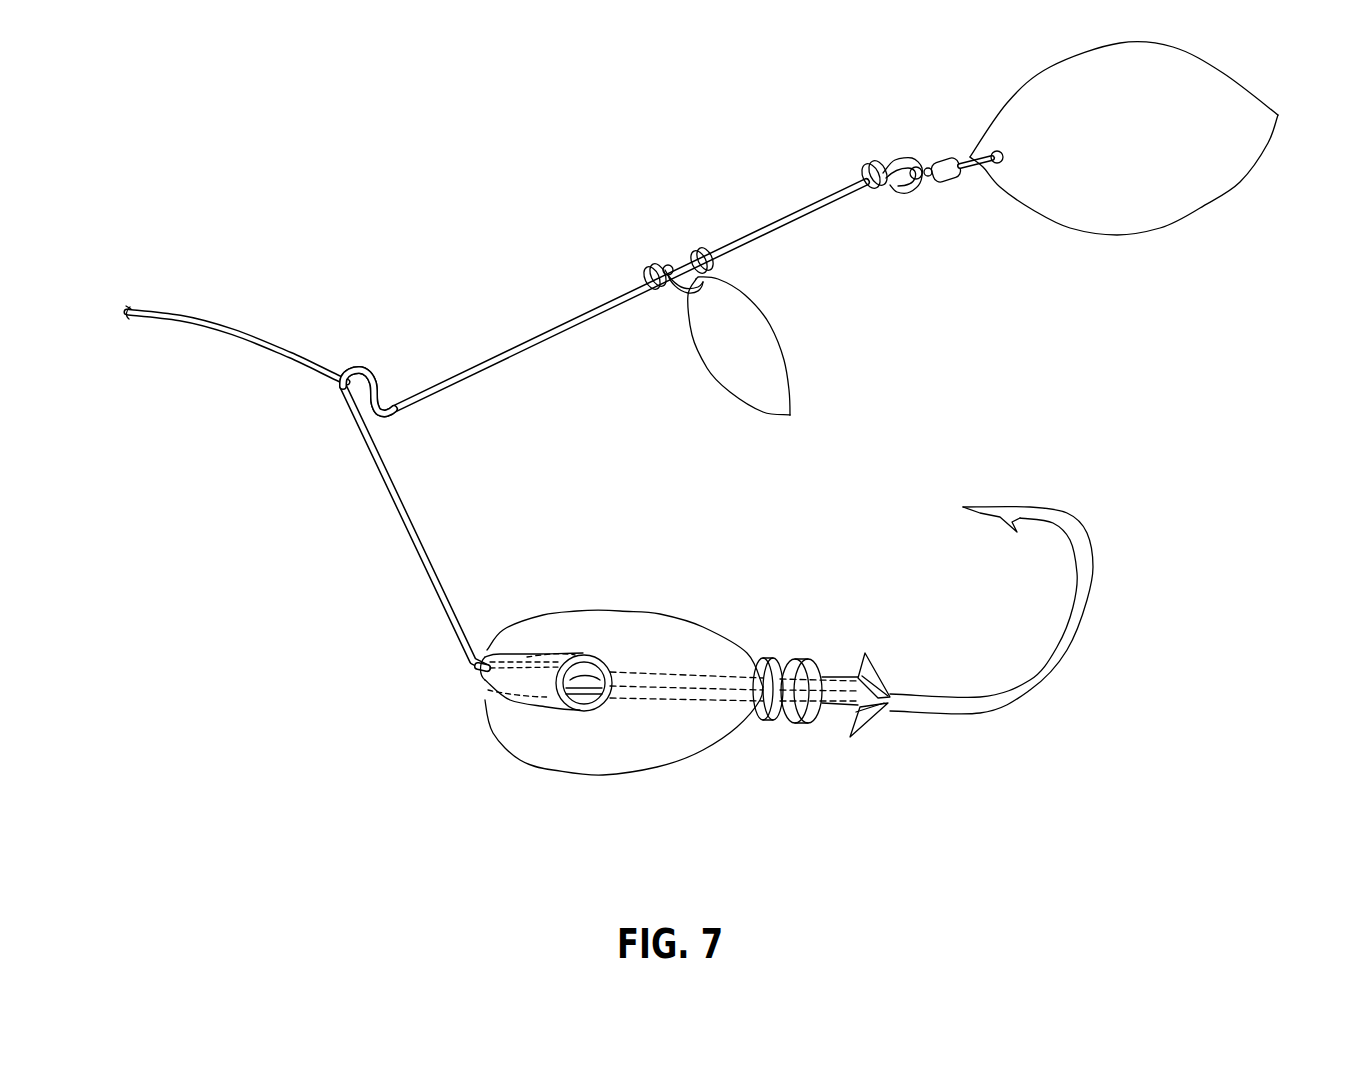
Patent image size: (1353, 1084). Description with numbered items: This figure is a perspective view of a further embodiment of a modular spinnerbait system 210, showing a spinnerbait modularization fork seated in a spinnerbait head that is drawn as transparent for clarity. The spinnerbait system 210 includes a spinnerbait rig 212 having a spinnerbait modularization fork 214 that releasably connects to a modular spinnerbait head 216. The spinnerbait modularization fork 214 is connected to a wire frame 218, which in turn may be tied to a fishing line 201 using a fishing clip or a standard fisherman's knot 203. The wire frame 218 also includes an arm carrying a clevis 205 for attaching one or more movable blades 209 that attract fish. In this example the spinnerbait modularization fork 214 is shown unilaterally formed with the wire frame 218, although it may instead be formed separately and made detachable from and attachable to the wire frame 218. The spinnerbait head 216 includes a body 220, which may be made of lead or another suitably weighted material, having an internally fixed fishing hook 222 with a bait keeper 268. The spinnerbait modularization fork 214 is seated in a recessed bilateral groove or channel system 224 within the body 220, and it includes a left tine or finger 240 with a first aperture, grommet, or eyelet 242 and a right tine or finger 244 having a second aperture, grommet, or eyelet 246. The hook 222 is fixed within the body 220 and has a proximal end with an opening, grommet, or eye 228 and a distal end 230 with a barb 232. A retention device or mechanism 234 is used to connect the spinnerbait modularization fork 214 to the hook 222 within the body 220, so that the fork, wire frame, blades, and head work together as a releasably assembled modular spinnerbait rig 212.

The modular spinnerbait system 210 is at (509, 188).
The fishing line 201 is at (205, 322).
The fisherman's knot 203 is at (340, 380).
The clevis 205 is at (915, 190).
The movable blades 209 is at (1036, 213).
The wire frame 218 is at (397, 495).
The spinnerbait modularization fork 214 is at (477, 687).
The modular spinnerbait head 216 is at (622, 678).
The body 220 is at (678, 764).
The fishing hook 222 is at (921, 680).
The channel system 224 is at (527, 657).
The eye 228 is at (565, 645).
The distal end 230 is at (1018, 557).
The barb 232 is at (984, 513).
The retention device 234 is at (614, 713).
The left tine 240 is at (503, 647).
The first eyelet 242 is at (537, 683).
The right tine 244 is at (515, 705).
The second eyelet 246 is at (587, 700).
The spinnerbait rig 212 is at (746, 762).
The bait keeper 268 is at (829, 744).